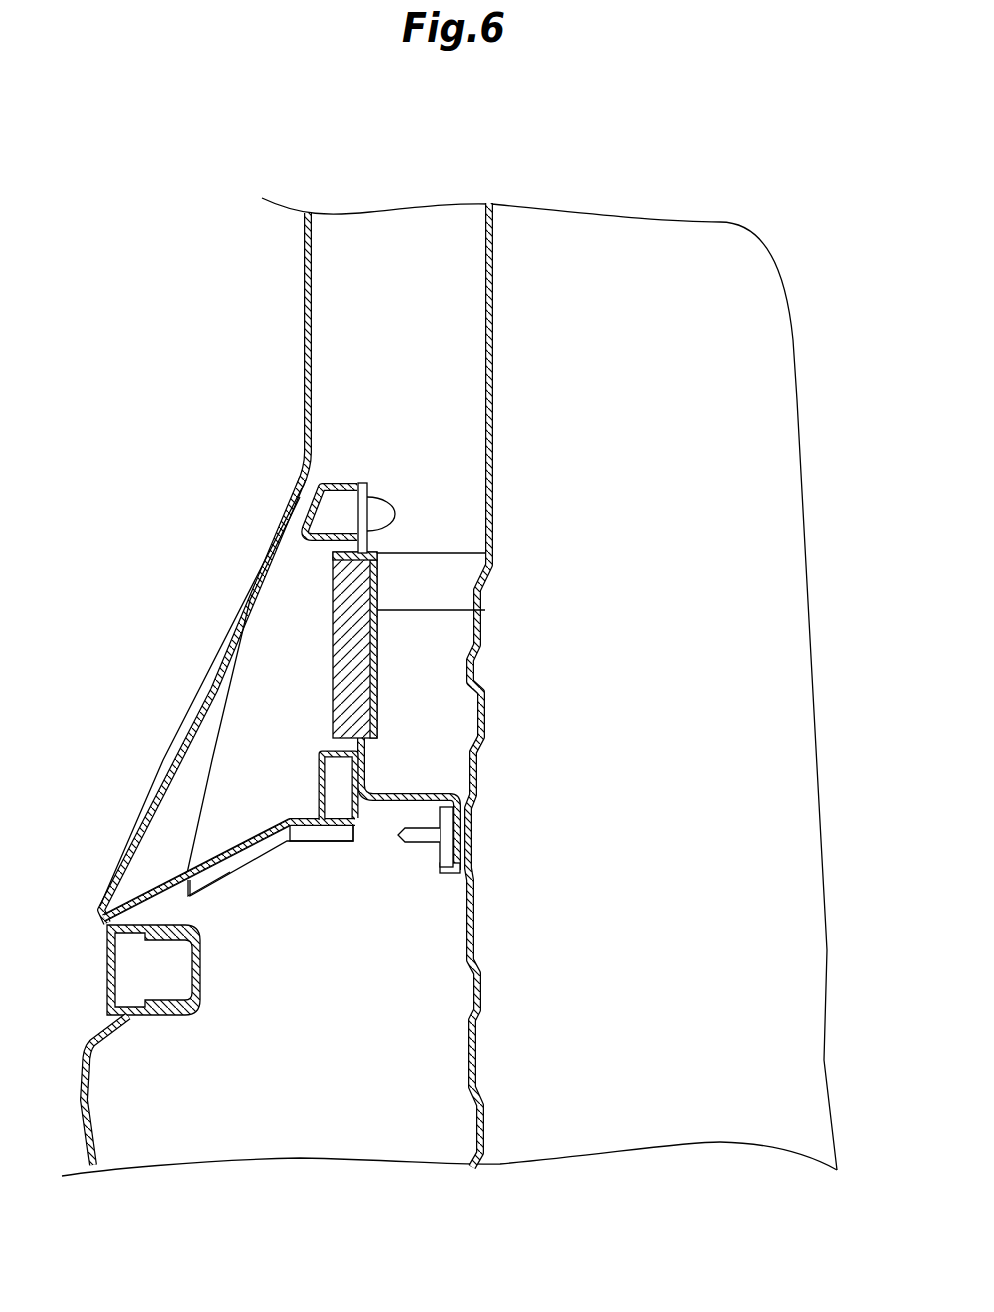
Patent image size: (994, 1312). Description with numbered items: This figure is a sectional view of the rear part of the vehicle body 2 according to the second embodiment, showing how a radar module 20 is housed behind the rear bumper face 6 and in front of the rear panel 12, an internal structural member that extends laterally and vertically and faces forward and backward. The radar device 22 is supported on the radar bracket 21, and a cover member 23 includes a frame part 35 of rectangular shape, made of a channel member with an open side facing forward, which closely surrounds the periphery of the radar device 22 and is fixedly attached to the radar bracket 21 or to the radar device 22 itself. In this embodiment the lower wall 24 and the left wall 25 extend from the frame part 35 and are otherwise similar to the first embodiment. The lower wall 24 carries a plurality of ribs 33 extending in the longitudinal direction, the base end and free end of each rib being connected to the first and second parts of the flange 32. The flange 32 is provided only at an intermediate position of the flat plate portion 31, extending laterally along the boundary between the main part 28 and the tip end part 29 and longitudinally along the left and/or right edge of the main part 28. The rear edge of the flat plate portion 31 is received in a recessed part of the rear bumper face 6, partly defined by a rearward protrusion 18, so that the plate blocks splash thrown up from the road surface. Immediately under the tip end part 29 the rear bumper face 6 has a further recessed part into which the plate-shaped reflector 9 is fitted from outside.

The vehicle body 2 is at (330, 210).
The rear bumper face 6 is at (167, 772).
The reflector 9 is at (108, 970).
The rear panel 12 is at (491, 690).
The rearward protrusion 18 is at (200, 975).
The clip 20 is at (366, 471).
The radar bracket 21 is at (440, 570).
The radar device 22 is at (358, 660).
The cover member 23 is at (216, 742).
The lower wall 24 is at (165, 883).
The left wall 25 is at (295, 625).
The main part 28 is at (263, 861).
The tip end part 29 is at (147, 895).
The flat plate portion 31 is at (227, 847).
The flange 32 is at (193, 887).
The ribs 33 is at (315, 835).
The frame part 35 is at (316, 520).